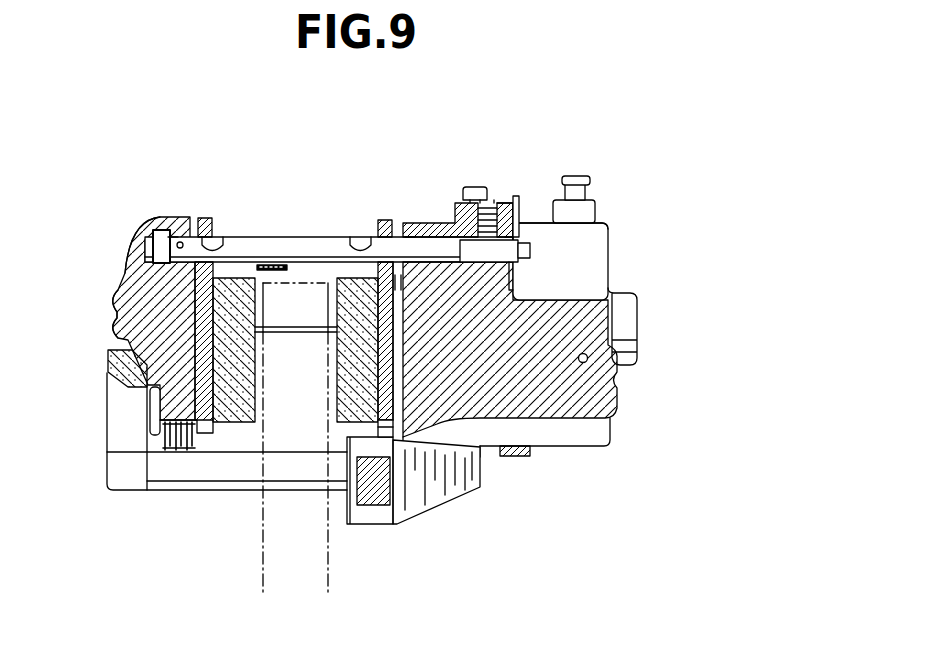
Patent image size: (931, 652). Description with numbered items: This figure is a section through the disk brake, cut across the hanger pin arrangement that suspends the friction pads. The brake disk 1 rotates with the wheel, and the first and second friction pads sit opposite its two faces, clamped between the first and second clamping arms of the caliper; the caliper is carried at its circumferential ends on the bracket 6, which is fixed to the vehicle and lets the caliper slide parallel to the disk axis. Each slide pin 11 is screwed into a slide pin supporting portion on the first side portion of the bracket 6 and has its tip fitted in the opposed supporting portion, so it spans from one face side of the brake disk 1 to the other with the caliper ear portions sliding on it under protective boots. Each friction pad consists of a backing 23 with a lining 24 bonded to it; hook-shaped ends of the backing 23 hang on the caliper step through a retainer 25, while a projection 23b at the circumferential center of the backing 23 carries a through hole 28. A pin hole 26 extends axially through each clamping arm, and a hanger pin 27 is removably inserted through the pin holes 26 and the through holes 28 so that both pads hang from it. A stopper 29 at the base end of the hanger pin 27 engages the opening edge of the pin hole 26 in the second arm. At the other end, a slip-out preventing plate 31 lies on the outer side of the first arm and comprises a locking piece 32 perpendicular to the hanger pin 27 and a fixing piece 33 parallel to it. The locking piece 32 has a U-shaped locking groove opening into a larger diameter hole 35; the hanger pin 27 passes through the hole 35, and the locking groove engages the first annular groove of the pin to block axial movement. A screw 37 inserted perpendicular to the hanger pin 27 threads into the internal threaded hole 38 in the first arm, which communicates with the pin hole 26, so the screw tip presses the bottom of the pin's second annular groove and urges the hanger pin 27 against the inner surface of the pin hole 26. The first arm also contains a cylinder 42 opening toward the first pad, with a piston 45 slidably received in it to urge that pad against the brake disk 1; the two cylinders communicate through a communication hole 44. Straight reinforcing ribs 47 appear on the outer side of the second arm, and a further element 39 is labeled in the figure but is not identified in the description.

The brake disk 1 is at (262, 550).
The bracket 6 is at (177, 492).
The slide pin 11 is at (515, 458).
The backing 23 is at (202, 320).
The projection 23b is at (204, 236).
The lining 24 is at (335, 357).
The retainer 25 is at (296, 282).
The pin hole 26 is at (173, 240).
The hanger pin 27 is at (315, 233).
The through hole 28 is at (216, 250).
The stopper 29 is at (157, 248).
The slip-out preventing plate 31 is at (519, 194).
The locking piece 32 is at (517, 238).
The fixing piece 33 is at (501, 202).
The larger diameter hole 35 is at (511, 264).
The screw 37 is at (475, 186).
The internal threaded hole 38 is at (462, 217).
The spring clip 39 is at (273, 263).
The cylinder 42 is at (572, 447).
The communication hole 44 is at (578, 358).
The piston 45 is at (402, 385).
The reinforcing rib 47 is at (110, 323).